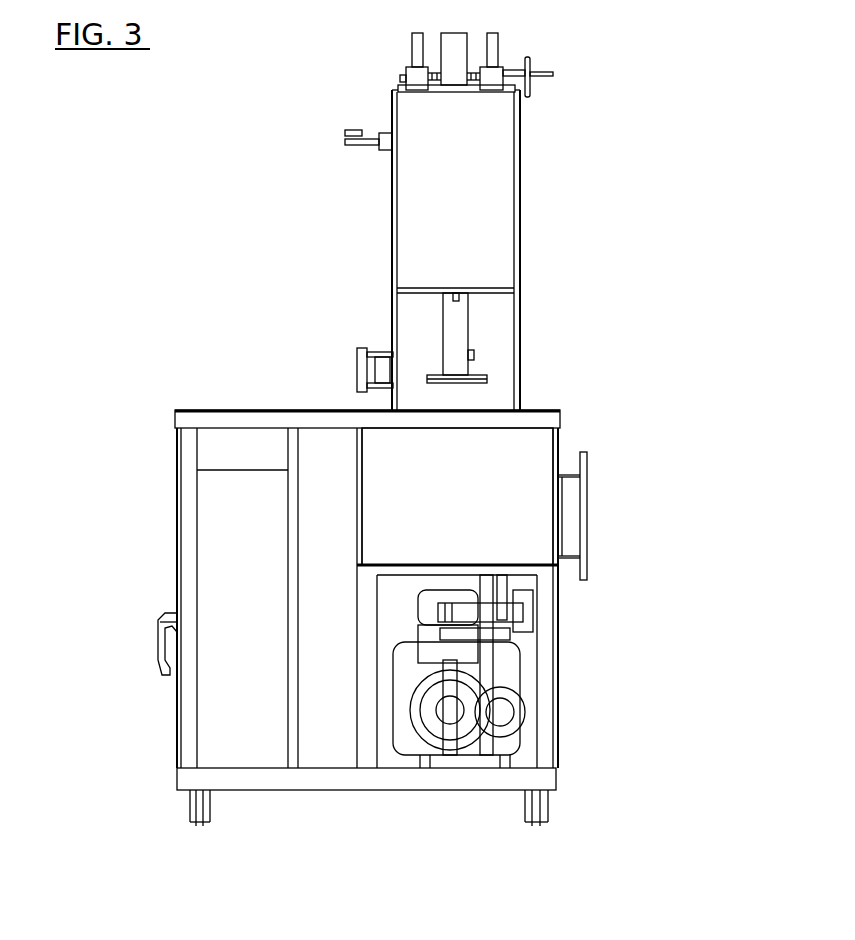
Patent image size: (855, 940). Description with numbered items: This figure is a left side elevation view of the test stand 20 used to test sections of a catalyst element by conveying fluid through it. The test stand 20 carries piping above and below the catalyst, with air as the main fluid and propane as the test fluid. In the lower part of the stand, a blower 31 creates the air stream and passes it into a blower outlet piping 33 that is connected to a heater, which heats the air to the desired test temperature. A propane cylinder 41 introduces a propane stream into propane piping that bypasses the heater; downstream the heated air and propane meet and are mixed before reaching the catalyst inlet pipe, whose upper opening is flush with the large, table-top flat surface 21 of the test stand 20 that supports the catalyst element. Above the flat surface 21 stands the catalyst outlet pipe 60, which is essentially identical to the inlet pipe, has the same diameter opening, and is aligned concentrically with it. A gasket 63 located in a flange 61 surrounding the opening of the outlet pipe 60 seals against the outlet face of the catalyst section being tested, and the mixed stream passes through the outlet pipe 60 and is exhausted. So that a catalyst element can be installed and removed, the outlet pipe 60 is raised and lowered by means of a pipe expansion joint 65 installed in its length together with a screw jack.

The test stand 20 is at (177, 450).
The flat surface 21 is at (243, 410).
The catalyst outlet pipe 60 is at (468, 316).
The flange 61 is at (487, 380).
The gasket 63 is at (427, 377).
The pipe expansion joint 65 is at (474, 358).
The blower outlet piping 33 is at (503, 667).
The propane cylinder 41 is at (395, 692).
The blower 31 is at (425, 735).